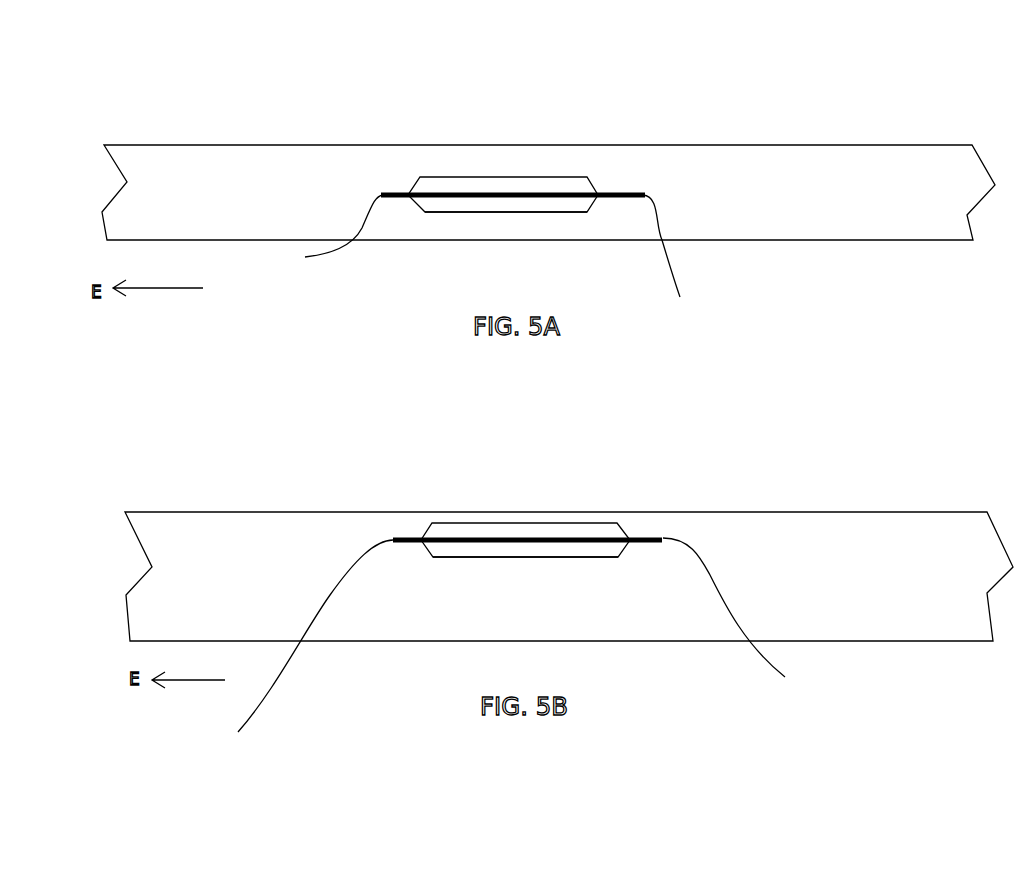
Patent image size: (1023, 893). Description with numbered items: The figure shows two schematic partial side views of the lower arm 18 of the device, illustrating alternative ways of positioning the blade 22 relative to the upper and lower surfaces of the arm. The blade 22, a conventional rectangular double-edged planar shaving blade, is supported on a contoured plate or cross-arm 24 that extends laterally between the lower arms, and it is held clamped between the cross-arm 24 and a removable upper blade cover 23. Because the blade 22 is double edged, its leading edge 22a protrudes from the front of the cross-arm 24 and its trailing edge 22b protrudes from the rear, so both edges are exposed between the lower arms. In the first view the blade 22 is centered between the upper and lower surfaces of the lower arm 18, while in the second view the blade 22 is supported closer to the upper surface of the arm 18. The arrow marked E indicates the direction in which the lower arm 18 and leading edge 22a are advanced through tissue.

In FIG. 5A, the arm 18 is at (720, 143).
In FIG. 5B, the arm 18 is at (763, 510).
In FIG. 5A, the blade 22 is at (467, 198).
In FIG. 5B, the blade 22 is at (482, 547).
In FIG. 5A, the leading edge 22a is at (331, 237).
In FIG. 5B, the leading edge 22a is at (300, 648).
In FIG. 5A, the trailing edge 22b is at (670, 256).
In FIG. 5B, the trailing edge 22b is at (735, 626).
In FIG. 5A, the upper blade cover 23 is at (535, 180).
In FIG. 5B, the upper blade cover 23 is at (535, 520).
In FIG. 5A, the cross-arm 24 is at (500, 212).
In FIG. 5B, the cross-arm 24 is at (577, 555).